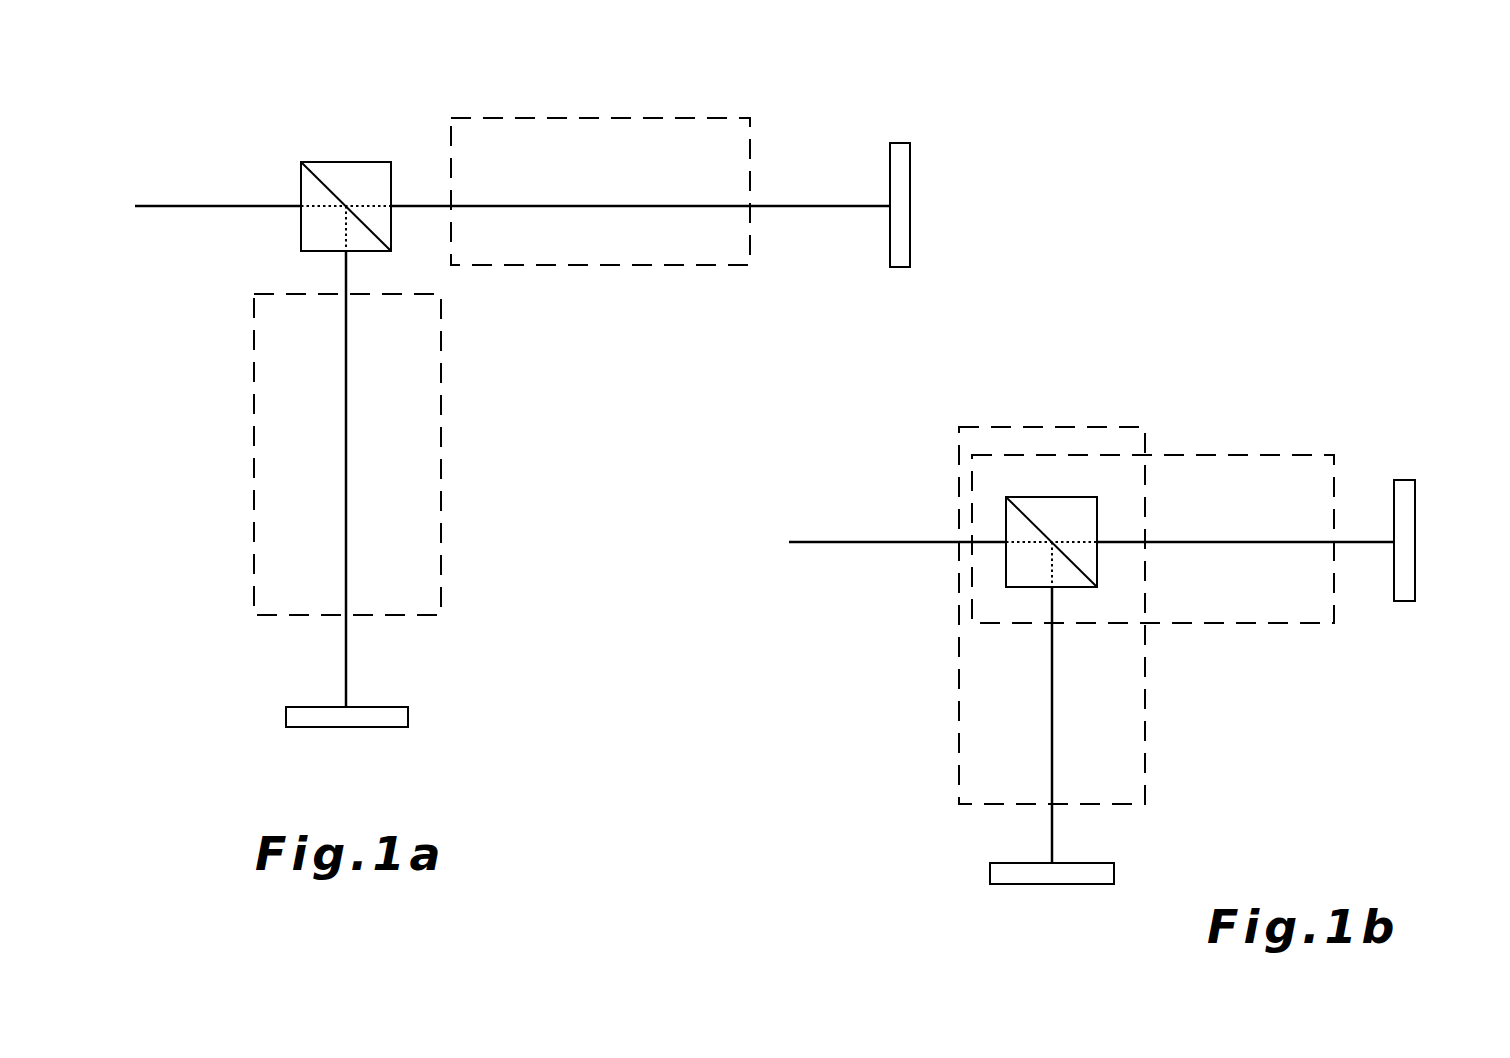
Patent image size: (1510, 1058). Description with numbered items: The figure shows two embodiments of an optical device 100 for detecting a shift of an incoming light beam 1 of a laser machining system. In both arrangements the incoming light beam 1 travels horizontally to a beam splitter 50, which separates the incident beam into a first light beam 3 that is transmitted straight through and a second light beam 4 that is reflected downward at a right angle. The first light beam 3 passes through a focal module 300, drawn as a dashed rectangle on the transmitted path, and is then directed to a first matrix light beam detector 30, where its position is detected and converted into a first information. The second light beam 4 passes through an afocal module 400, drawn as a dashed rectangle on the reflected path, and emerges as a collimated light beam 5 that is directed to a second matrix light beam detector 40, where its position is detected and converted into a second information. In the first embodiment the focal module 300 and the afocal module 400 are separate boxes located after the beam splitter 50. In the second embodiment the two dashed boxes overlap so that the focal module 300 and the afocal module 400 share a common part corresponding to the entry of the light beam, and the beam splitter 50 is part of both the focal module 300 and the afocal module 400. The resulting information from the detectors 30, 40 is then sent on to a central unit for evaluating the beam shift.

In FIG. 1A, the optical measuring system 100 is at (210, 130).
In FIG. 1B, the optical measuring system 100 is at (864, 437).
In FIG. 1A, the incoming light beam 1 is at (195, 206).
In FIG. 1B, the incoming light beam 1 is at (848, 542).
In FIG. 1A, the beam splitter 50 is at (352, 158).
In FIG. 1B, the beam splitter 50 is at (1043, 495).
In FIG. 1A, the focal module 300 is at (587, 115).
In FIG. 1B, the focal module 300 is at (1247, 452).
In FIG. 1A, the first light beam 3 is at (650, 206).
In FIG. 1B, the first light beam 3 is at (1285, 541).
In FIG. 1A, the first matrix light beam detector 30 is at (902, 187).
In FIG. 1B, the first matrix light beam detector 30 is at (1403, 537).
In FIG. 1A, the afocal module 400 is at (253, 467).
In FIG. 1B, the afocal module 400 is at (958, 735).
In FIG. 1A, the second light beam 4 is at (345, 440).
In FIG. 1B, the second light beam 4 is at (1050, 728).
In FIG. 1A, the collimated light beam 5 is at (345, 668).
In FIG. 1B, the collimated light beam 5 is at (1050, 842).
In FIG. 1A, the second matrix light beam detector 40 is at (388, 717).
In FIG. 1B, the second matrix light beam detector 40 is at (1043, 873).